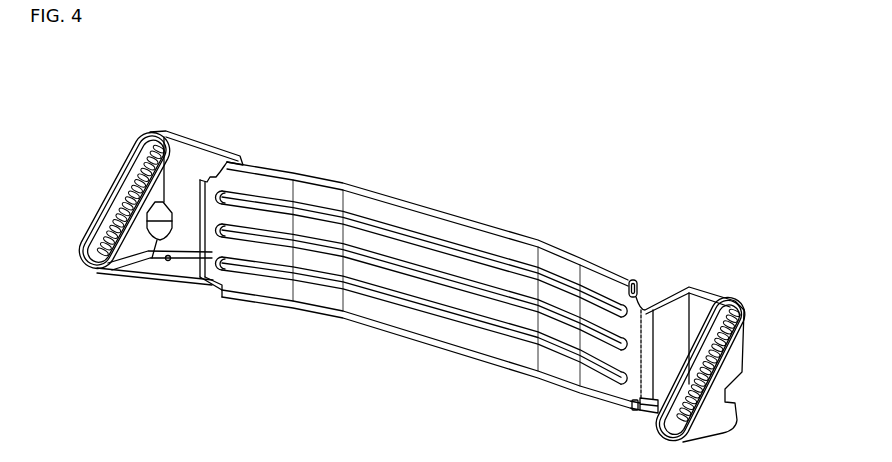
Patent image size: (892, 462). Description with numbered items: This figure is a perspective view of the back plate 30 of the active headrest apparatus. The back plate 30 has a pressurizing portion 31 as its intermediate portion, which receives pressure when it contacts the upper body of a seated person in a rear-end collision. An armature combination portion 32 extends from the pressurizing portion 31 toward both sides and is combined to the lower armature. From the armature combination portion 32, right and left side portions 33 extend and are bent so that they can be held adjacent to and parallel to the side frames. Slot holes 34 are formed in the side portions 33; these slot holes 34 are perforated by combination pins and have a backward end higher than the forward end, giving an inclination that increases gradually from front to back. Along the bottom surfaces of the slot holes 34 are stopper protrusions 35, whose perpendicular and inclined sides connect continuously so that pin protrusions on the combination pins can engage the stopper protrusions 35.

The back plate 30 is at (440, 192).
The pressurizing portion 31 is at (434, 328).
The armature combination portion 32 is at (205, 158).
The side portions 33 is at (108, 193).
The slot holes 34 is at (124, 176).
The stopper protrusions 35 is at (124, 244).